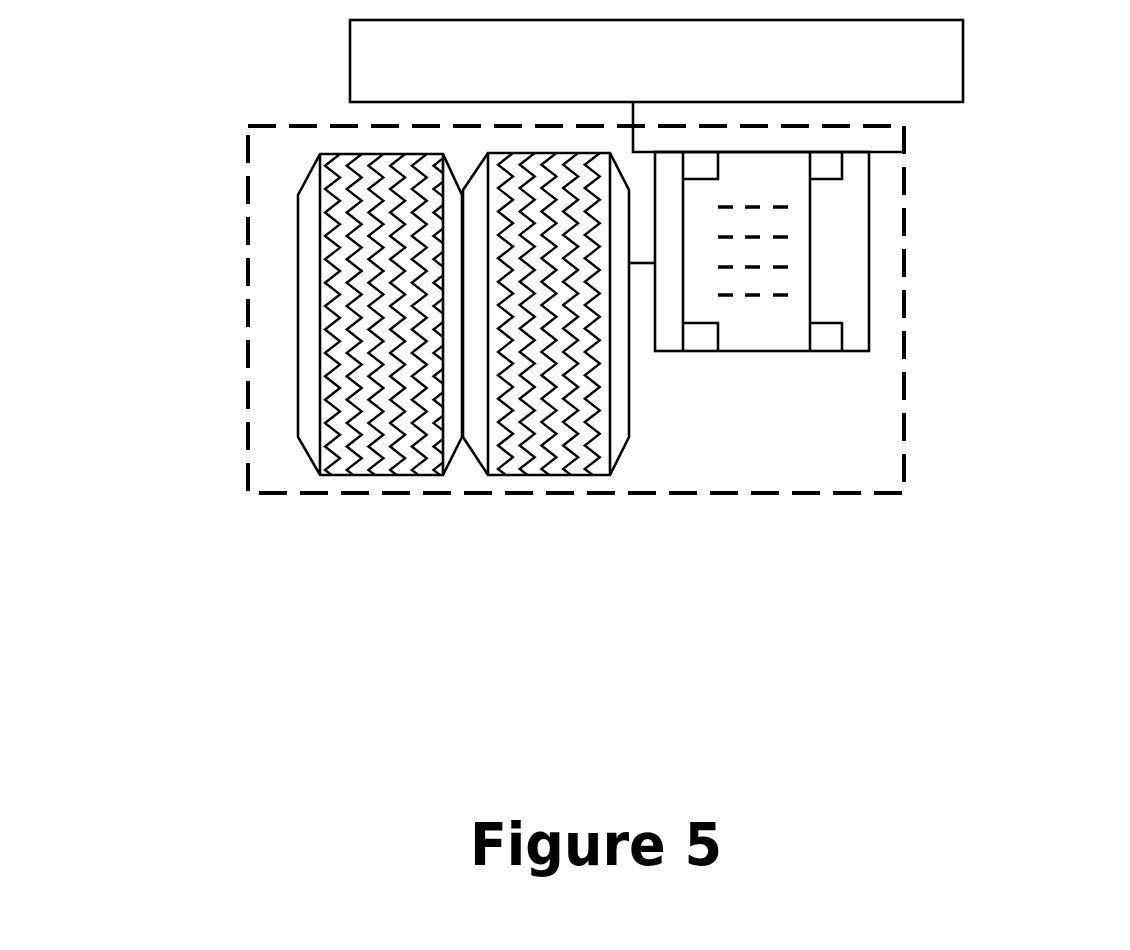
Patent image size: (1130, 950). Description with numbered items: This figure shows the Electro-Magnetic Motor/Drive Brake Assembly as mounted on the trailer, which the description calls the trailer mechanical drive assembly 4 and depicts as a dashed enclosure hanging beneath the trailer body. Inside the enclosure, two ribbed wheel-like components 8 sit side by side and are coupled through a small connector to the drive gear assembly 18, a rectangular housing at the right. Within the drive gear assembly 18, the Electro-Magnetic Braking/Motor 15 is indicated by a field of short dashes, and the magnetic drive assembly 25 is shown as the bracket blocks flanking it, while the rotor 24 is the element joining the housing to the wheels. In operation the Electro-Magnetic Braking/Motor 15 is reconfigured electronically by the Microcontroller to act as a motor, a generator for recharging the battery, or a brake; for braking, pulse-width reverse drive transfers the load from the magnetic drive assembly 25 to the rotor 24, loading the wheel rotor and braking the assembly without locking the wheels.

The trailer mechanical drive assembly 4 is at (270, 257).
The rollers 8 is at (393, 462).
The rotor 24 is at (642, 320).
The drive gear assembly 18 is at (667, 323).
The magnetic drive assembly 25 is at (855, 322).
The Electro-Magnetic Braking/Motor 15 is at (745, 307).